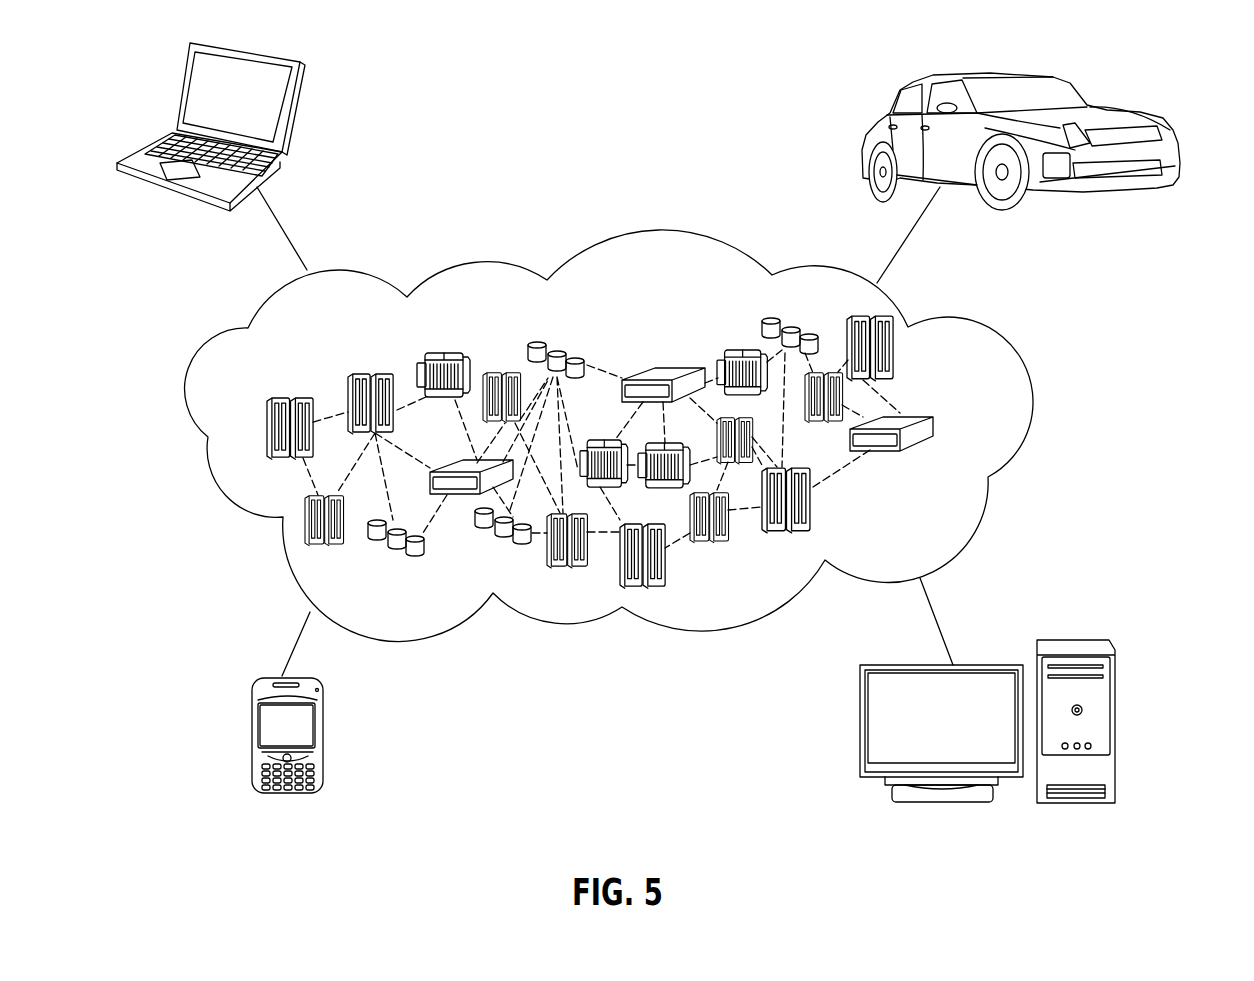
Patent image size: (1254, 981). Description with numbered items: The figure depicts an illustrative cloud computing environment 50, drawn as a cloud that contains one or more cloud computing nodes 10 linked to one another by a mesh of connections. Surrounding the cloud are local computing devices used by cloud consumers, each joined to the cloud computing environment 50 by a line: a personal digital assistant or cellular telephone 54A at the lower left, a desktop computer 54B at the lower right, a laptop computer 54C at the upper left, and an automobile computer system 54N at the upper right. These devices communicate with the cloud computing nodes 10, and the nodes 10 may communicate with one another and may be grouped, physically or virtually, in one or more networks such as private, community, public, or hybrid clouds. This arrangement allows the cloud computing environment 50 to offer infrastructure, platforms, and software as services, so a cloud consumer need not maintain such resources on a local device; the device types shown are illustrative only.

The cloud computing node 10 is at (986, 432).
The cloud computing environment 50 is at (998, 343).
The personal digital assistant or cellular telephone 54A is at (253, 740).
The desktop computer 54B is at (1082, 642).
The laptop computer 54C is at (293, 110).
The automobile computer system 54N is at (870, 120).